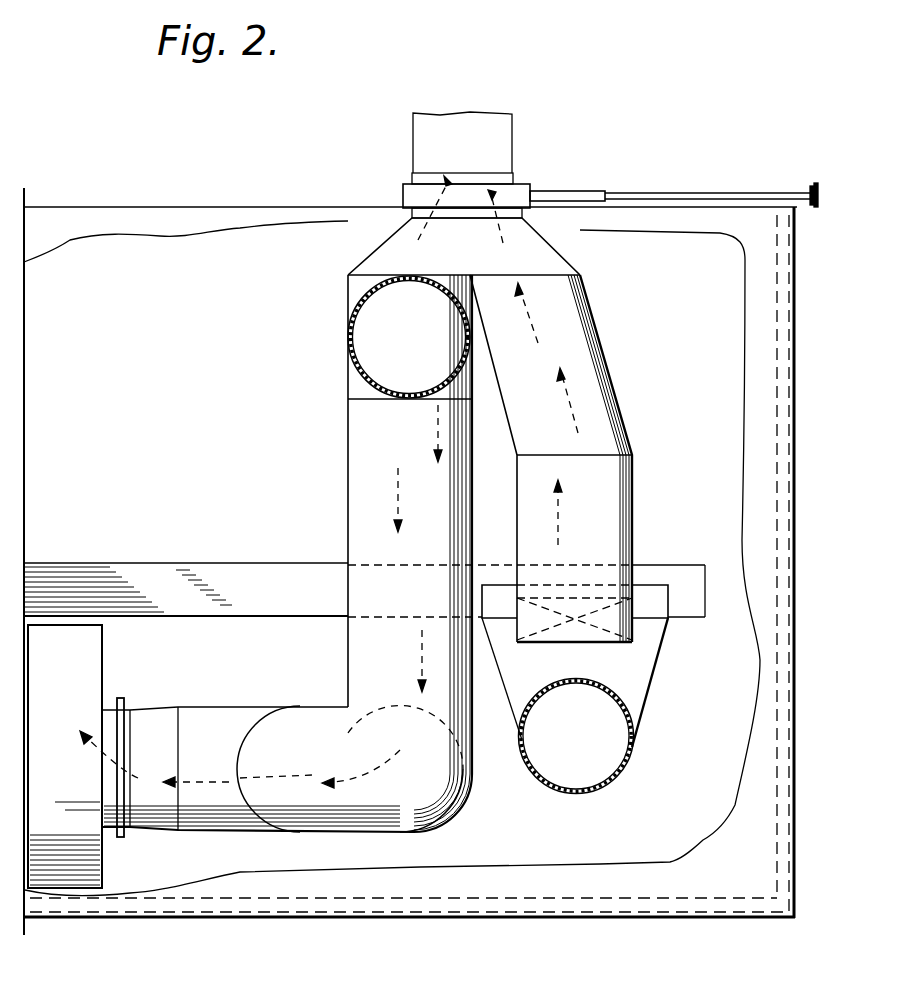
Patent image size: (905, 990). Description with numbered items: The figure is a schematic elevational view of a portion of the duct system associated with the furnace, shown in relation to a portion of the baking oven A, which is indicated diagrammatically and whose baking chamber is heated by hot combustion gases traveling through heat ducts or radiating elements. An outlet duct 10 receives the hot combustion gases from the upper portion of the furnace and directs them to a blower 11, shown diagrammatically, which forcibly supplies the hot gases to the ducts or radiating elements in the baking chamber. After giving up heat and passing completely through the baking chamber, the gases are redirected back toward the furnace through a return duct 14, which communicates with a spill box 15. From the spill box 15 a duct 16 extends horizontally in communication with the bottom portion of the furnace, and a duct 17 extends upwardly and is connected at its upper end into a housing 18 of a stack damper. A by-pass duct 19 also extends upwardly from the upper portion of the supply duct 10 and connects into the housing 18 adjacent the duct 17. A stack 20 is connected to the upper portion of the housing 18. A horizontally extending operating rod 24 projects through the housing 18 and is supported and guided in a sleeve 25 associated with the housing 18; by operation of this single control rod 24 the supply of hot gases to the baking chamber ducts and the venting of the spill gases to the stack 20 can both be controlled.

The baking oven A is at (195, 224).
The outlet duct 10 is at (368, 378).
The blower 11 is at (88, 868).
The return duct 14 is at (251, 572).
The spill box 15 is at (613, 628).
The duct 16 is at (626, 708).
The duct 17 is at (625, 413).
The housing 18 is at (512, 196).
The by-pass duct 19 is at (390, 253).
The stack 20 is at (500, 144).
The operating rod 24 is at (668, 182).
The sleeve 25 is at (558, 197).